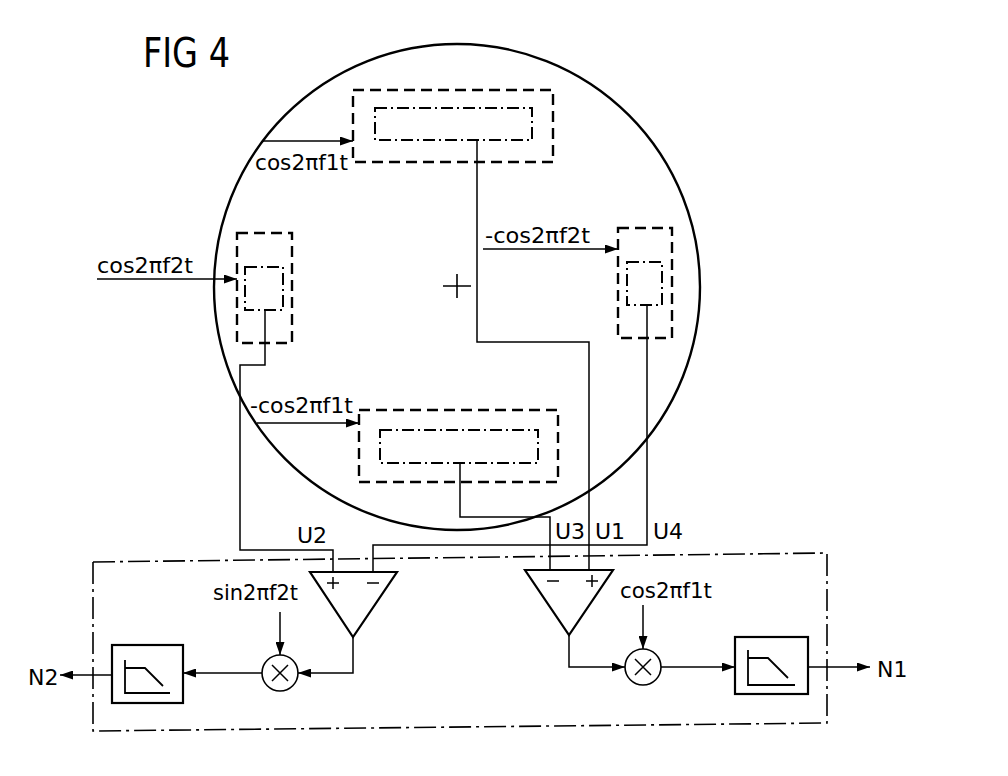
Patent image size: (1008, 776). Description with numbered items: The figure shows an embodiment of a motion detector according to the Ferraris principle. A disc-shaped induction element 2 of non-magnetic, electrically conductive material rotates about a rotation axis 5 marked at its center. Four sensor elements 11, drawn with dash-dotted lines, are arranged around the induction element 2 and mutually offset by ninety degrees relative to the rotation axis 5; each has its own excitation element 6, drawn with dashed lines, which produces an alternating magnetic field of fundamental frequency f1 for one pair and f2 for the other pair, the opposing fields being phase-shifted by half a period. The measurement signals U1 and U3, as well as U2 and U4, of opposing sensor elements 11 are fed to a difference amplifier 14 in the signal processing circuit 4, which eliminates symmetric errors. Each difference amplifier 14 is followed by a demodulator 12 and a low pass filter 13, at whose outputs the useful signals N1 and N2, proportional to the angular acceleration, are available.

The induction element 2 is at (703, 285).
The signal processing circuit 4 is at (140, 562).
The rotation axis 5 is at (452, 282).
The excitation element 6 is at (553, 128).
The sensor element 11 is at (424, 142).
The demodulator 12 is at (297, 688).
The low pass filter 13 is at (148, 645).
The difference amplifier 14 is at (380, 600).